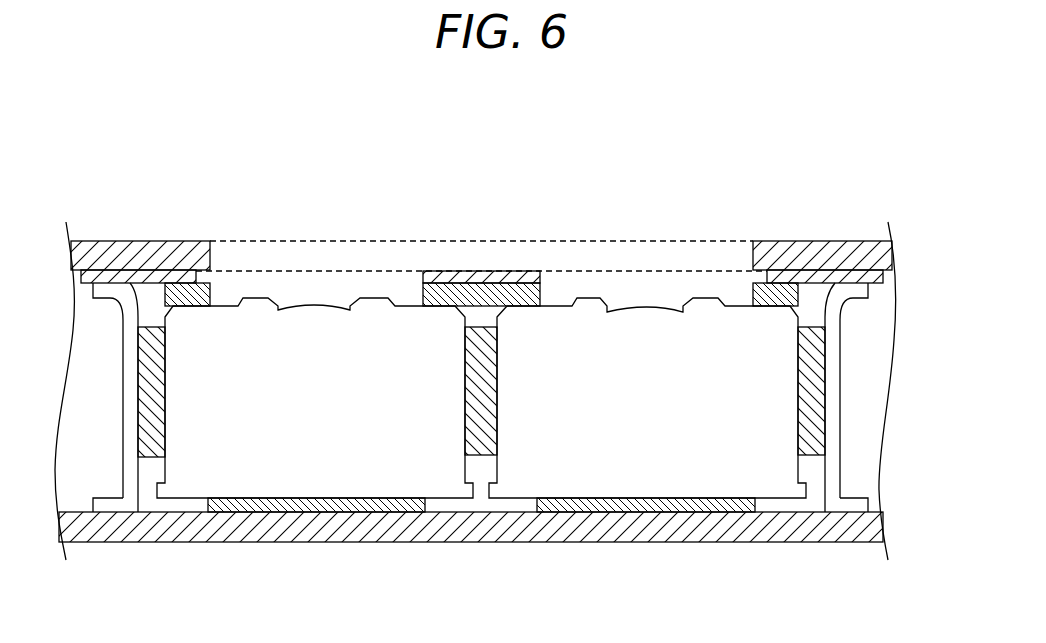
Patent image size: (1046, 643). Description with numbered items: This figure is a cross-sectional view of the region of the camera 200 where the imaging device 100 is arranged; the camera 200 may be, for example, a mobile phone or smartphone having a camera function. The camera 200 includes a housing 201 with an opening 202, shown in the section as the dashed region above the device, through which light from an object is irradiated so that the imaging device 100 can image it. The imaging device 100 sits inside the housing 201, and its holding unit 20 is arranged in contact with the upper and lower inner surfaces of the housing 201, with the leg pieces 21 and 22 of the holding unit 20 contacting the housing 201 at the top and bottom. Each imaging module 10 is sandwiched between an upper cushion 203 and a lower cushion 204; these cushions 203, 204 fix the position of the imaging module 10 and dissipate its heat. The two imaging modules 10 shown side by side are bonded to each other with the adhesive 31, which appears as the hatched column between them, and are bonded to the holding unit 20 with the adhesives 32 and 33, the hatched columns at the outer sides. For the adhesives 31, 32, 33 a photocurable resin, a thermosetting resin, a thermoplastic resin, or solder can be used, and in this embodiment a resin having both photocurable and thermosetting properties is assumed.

The camera 200 is at (837, 212).
The housing 201 is at (150, 250).
The opening 202 is at (695, 240).
The cushion 203 is at (210, 285).
The cushion 204 is at (302, 507).
The imaging device 100 is at (352, 285).
The imaging module 10 is at (585, 298).
The holding unit 20 is at (516, 397).
The leg piece 21 is at (857, 307).
The leg piece 22 is at (862, 492).
The adhesive 31 is at (488, 457).
The adhesive 32 is at (155, 457).
The adhesive 33 is at (822, 457).